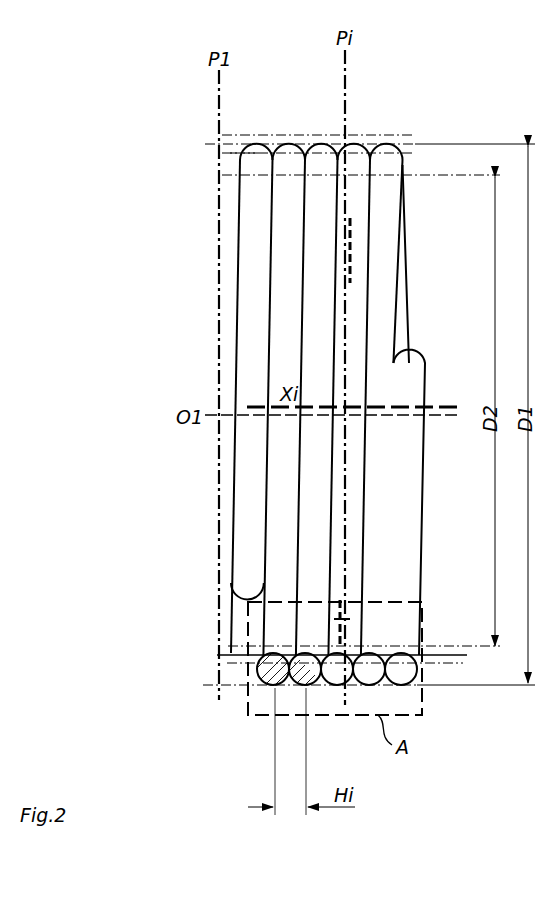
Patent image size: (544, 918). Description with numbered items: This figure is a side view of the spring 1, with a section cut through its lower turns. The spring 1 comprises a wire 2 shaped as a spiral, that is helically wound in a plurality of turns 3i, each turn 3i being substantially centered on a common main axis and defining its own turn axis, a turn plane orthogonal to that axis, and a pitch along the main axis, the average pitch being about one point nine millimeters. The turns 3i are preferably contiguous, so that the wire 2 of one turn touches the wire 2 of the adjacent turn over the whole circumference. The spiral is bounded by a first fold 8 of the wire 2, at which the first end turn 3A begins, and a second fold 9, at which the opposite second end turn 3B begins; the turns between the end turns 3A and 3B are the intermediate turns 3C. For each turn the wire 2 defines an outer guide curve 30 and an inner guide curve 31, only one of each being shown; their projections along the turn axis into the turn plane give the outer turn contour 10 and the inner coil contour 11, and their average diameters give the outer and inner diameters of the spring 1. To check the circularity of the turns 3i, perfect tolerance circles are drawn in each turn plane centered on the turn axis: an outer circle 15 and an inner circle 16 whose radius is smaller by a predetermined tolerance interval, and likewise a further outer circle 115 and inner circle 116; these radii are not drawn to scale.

The spring 1 is at (401, 99).
The wire 2 is at (245, 300).
The first end turn 3A is at (384, 163).
The second end turn 3B is at (257, 172).
The intermediate turn 3C is at (293, 172).
The turn 3i is at (352, 175).
The first fold 8 is at (408, 380).
The second fold 9 is at (245, 580).
The outer turn contour 10 is at (213, 143).
The inner coil contour 11 is at (228, 655).
The outer tolerance circle 15 is at (246, 132).
The inner tolerance circle 16 is at (233, 156).
The outer guide curve 30 is at (343, 240).
The inner guide curve 31 is at (348, 619).
The outer tolerance circle 115 is at (228, 664).
The inner tolerance circle 116 is at (238, 646).